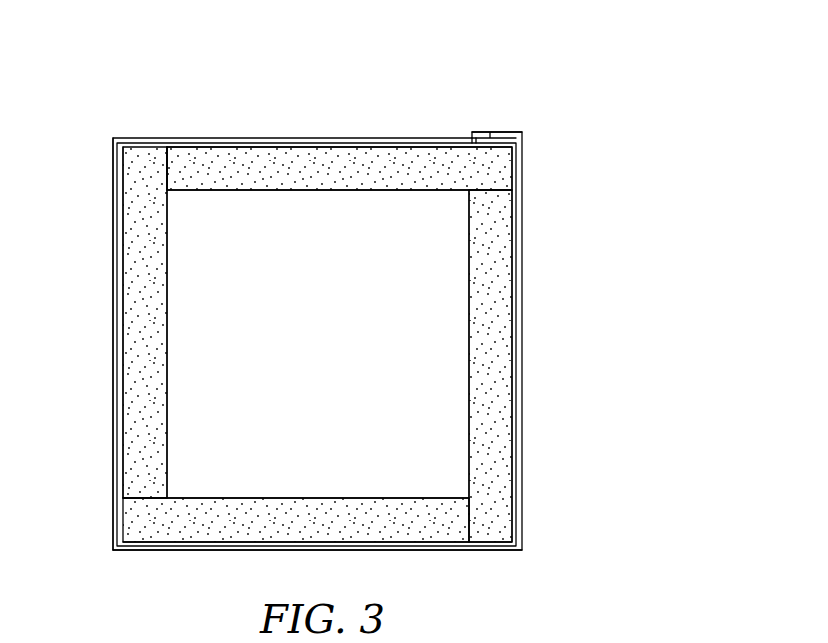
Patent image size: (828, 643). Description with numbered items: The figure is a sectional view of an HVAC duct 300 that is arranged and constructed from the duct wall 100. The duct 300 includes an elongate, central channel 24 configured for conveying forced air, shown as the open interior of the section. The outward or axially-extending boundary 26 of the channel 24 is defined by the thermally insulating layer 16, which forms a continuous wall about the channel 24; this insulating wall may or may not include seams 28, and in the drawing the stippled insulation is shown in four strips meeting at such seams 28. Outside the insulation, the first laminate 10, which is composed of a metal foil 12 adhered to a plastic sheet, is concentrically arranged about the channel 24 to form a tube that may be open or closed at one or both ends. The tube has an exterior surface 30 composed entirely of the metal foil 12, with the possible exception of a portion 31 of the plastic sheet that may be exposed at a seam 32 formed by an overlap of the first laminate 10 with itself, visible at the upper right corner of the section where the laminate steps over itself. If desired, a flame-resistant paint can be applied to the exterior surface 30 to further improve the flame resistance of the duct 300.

The first laminate 10 is at (470, 130).
The metal foil 12 is at (522, 448).
The thermally insulating layer 16 is at (360, 158).
The central channel 24 is at (348, 347).
The boundary 26 is at (263, 192).
The seams 28 is at (174, 167).
The exterior surface 30 is at (296, 136).
The portion of plastic sheet 31 is at (469, 136).
The seam 32 is at (490, 132).
The duct wall 100 is at (523, 547).
The HVAC duct 300 is at (584, 203).